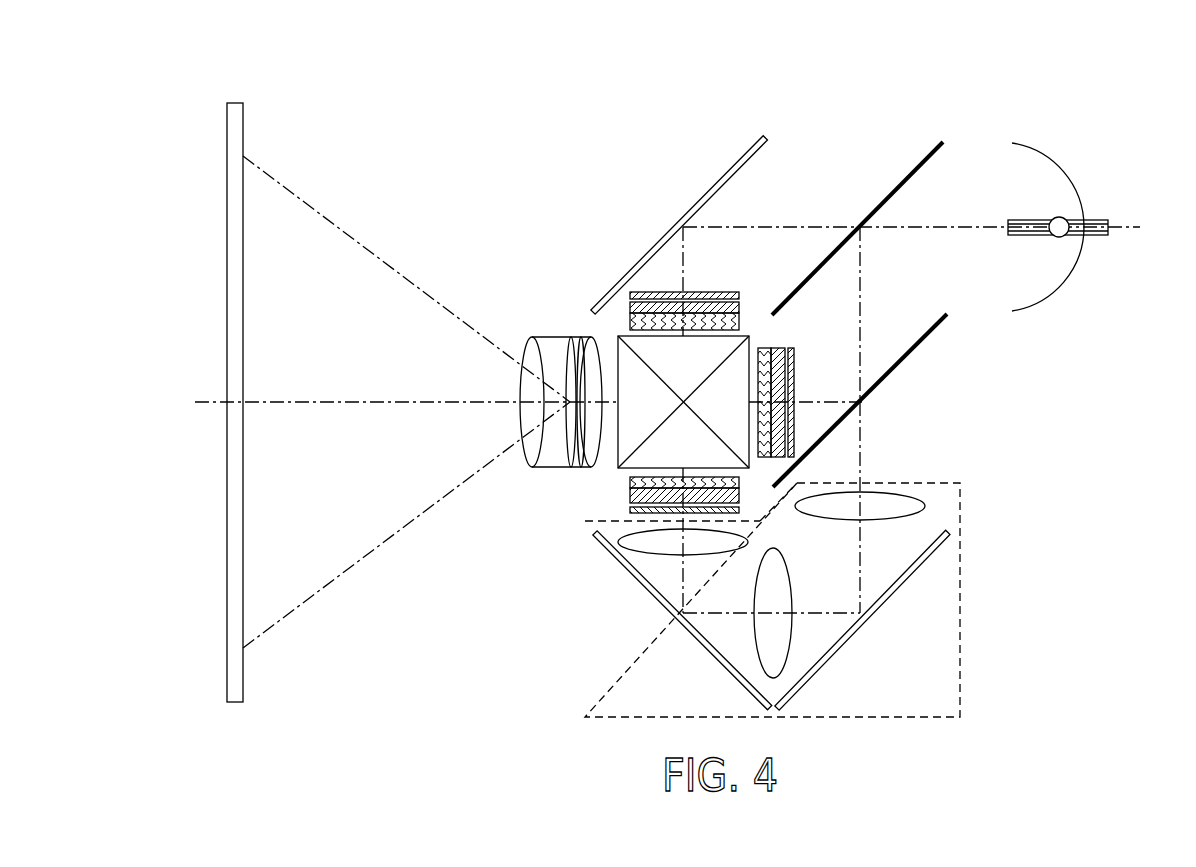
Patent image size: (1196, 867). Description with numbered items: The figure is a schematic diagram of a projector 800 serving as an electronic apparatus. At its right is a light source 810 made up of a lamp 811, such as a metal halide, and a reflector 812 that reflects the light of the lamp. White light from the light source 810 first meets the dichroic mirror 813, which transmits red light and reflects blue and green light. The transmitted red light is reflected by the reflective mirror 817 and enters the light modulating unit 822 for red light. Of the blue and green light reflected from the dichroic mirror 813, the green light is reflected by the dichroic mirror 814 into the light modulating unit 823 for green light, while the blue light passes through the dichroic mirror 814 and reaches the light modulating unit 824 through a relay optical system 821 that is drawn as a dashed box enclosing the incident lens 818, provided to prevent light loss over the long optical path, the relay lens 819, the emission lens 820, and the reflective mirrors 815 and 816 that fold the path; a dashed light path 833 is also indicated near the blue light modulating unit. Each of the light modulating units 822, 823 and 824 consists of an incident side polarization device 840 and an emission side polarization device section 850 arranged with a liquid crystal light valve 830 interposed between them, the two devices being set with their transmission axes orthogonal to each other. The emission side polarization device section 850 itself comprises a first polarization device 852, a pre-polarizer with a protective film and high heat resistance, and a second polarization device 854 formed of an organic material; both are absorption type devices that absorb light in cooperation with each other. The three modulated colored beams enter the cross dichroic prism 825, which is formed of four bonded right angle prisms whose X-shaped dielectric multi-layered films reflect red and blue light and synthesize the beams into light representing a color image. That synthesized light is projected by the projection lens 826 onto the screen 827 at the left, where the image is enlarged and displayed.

The projector 800 is at (998, 76).
The light source 810 is at (1074, 224).
The lamp 811 is at (1057, 218).
The reflector 812 is at (1068, 180).
The dichroic mirror 813 is at (913, 173).
The dichroic mirror 814 is at (915, 350).
The reflective mirror 815 is at (845, 648).
The reflective mirror 816 is at (700, 648).
The reflective mirror 817 is at (737, 173).
The incident lens 818 is at (898, 500).
The relay lens 819 is at (780, 580).
The emission lens 820 is at (722, 546).
The relay optical system 821 is at (813, 577).
The light modulating unit 822 is at (487, 220).
The light modulating unit 823 is at (802, 343).
The light modulating unit 824 is at (615, 505).
The cross dichroic prism 825 is at (745, 333).
The projection lens 826 is at (517, 478).
The screen 827 is at (241, 102).
The liquid crystal light valve 830 is at (628, 312).
The light path 833 is at (767, 512).
The incident side polarization device 840 is at (641, 292).
The emission side polarization device section 850 is at (525, 332).
The first polarization device 852 is at (628, 306).
The second polarization device 854 is at (628, 324).